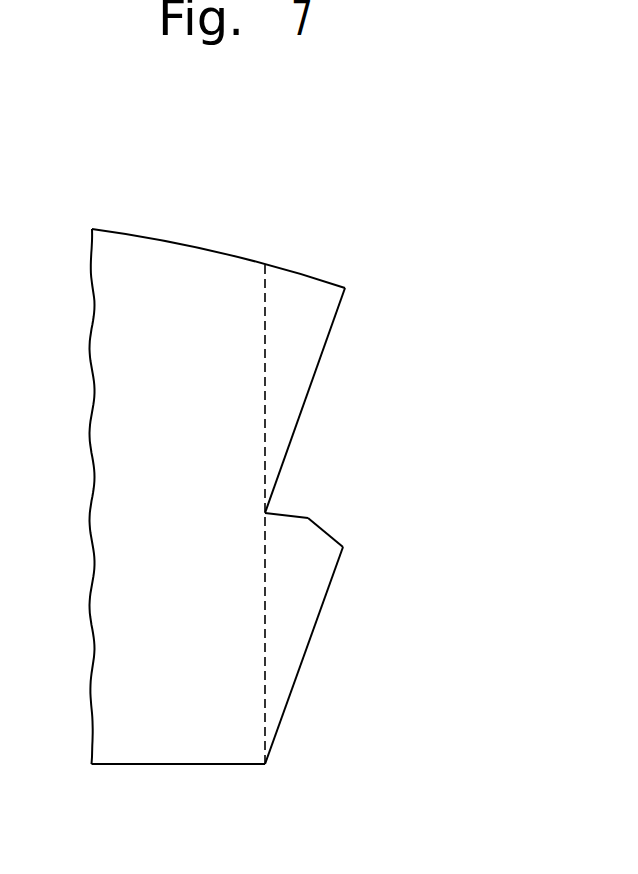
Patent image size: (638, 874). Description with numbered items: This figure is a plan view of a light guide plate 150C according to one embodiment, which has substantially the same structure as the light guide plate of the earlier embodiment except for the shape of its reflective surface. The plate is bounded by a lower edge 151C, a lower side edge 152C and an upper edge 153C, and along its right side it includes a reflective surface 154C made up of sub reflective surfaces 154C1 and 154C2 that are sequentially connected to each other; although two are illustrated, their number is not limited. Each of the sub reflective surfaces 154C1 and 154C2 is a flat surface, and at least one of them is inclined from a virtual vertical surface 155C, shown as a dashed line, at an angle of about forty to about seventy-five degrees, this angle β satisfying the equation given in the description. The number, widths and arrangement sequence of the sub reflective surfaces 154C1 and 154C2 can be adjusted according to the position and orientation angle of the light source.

The light guide plate 150C is at (274, 501).
The bottom surface 151C is at (177, 765).
The lower side surface 152C is at (307, 652).
The top surface 153C is at (220, 252).
The reflective surface 154C is at (361, 473).
The sub reflective surface 154C1 is at (327, 530).
The sub reflective surface 154C2 is at (288, 515).
The virtual vertical surface 155C is at (265, 358).